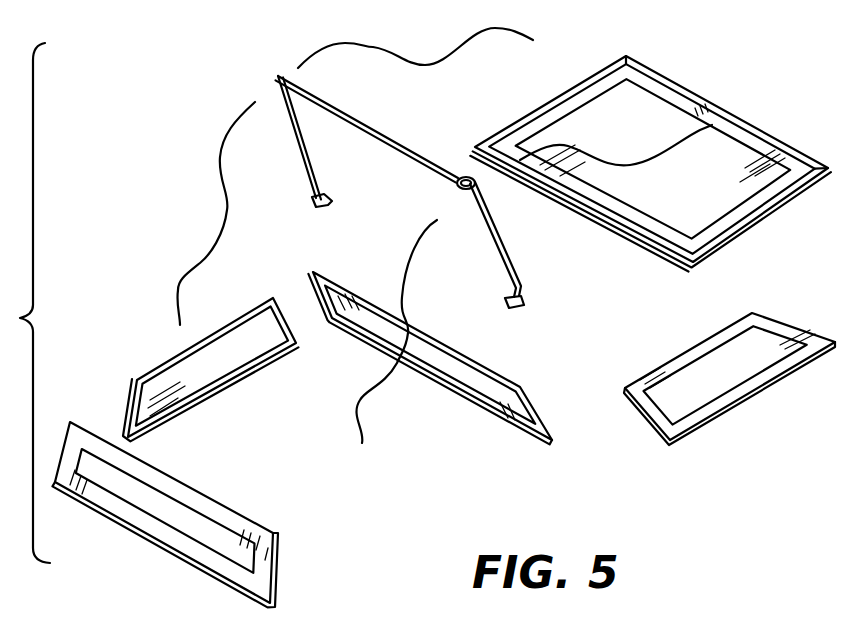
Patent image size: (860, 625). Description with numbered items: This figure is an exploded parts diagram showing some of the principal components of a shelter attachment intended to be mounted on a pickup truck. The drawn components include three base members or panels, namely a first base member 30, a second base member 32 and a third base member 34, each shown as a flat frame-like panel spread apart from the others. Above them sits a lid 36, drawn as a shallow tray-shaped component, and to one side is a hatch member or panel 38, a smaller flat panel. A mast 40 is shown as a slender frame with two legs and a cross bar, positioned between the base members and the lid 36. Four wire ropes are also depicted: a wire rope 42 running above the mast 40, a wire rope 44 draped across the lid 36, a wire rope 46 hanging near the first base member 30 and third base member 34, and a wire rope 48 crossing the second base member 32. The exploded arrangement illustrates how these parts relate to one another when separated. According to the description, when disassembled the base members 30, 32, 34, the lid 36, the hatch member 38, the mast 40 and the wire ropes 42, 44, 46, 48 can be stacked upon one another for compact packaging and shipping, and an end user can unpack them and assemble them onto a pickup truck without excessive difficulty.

The first base member 30 is at (217, 512).
The second base member 32 is at (465, 378).
The third base member 34 is at (247, 342).
The lid 36 is at (770, 198).
The hatch member 38 is at (660, 405).
The mast 40 is at (407, 155).
The wire rope 42 is at (373, 47).
The wire rope 44 is at (712, 125).
The wire rope 46 is at (220, 157).
The wire rope 48 is at (400, 292).